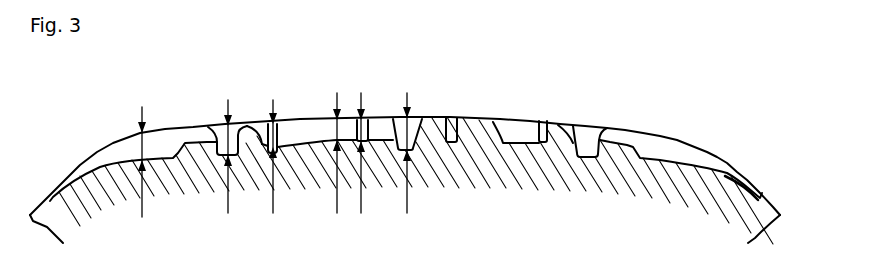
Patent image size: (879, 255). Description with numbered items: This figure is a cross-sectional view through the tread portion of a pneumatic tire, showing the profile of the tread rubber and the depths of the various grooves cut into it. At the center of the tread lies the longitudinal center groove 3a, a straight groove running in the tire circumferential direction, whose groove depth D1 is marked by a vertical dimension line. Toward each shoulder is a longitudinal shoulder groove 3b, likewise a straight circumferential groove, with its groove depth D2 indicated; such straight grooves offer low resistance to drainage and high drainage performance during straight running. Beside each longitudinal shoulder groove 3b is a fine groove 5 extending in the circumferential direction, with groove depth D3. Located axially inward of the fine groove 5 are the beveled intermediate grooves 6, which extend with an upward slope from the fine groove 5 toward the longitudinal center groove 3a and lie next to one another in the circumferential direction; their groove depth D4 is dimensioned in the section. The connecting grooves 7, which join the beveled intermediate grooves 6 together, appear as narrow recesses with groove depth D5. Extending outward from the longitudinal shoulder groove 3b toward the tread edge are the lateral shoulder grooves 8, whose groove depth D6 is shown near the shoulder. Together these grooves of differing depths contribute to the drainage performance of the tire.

The lateral shoulder groove 8 is at (113, 143).
The beveled intermediate groove 6 is at (312, 121).
The longitudinal center groove 3a is at (416, 119).
The longitudinal shoulder groove 3b is at (214, 128).
The fine groove 5 is at (267, 128).
The connecting groove 7 is at (366, 132).
The groove depth of longitudinal center groove D1 is at (416, 167).
The groove depth of longitudinal shoulder groove D2 is at (228, 170).
The groove depth of fine groove D3 is at (275, 170).
The groove depth of beveled intermediate groove D4 is at (327, 167).
The groove depth of connecting groove D5 is at (373, 167).
The groove depth of lateral shoulder groove D6 is at (145, 175).